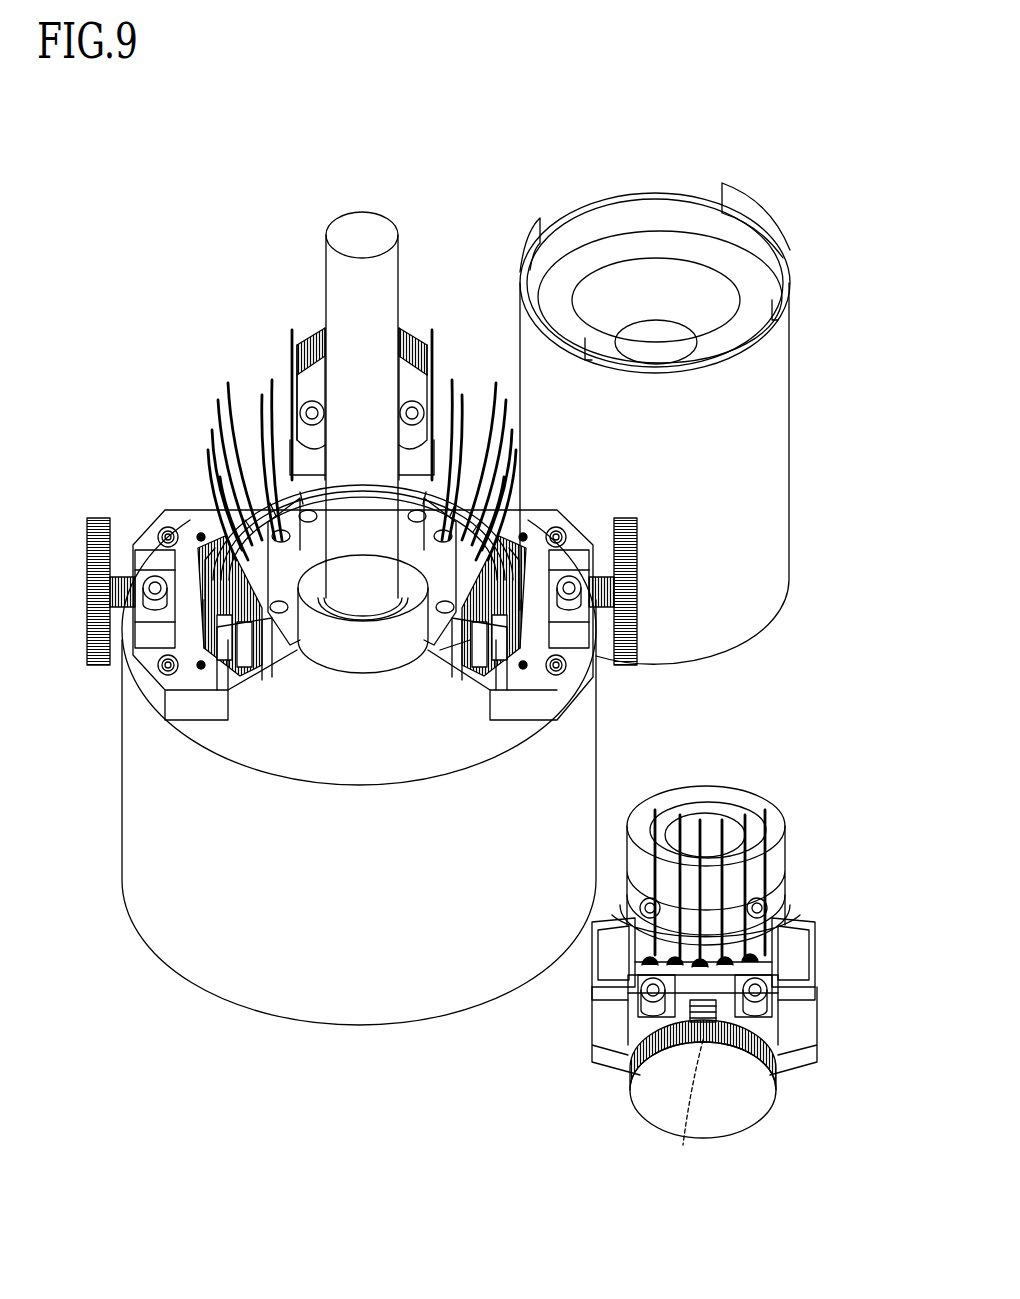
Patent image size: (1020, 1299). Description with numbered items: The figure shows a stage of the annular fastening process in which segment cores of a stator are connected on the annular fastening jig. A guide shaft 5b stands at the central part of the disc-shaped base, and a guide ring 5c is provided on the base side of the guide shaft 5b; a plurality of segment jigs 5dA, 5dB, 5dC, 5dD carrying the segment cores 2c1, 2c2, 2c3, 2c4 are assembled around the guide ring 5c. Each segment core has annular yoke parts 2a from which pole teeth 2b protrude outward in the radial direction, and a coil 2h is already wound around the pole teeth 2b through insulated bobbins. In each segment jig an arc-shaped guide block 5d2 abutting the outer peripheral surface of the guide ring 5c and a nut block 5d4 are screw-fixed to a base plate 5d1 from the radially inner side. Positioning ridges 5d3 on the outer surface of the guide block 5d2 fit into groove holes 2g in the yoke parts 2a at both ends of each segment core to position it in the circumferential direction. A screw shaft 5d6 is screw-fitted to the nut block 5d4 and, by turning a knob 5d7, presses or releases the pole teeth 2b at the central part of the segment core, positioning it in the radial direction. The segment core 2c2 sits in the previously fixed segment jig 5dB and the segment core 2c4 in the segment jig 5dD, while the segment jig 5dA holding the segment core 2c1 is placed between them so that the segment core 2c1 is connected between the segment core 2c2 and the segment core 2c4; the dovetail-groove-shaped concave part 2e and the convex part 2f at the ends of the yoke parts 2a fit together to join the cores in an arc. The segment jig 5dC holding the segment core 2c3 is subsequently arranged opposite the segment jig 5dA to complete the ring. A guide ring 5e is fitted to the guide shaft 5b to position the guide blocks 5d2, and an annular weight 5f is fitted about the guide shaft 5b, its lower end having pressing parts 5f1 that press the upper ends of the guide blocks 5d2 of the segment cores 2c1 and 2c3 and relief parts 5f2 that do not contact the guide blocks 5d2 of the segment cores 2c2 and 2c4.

The annular yoke part 2a is at (180, 692).
The pole tooth 2b is at (812, 976).
The segment core 2c1 is at (280, 470).
The segment core 2c2 is at (205, 575).
The segment core 2c3 is at (812, 932).
The segment core 2c4 is at (524, 526).
The concave part 2e is at (258, 645).
The convex part 2f is at (462, 652).
The groove hole 2g is at (240, 622).
The coil 2h is at (222, 616).
The guide shaft 5b is at (396, 226).
The guide ring 5c is at (366, 676).
The base plate 5d1 is at (470, 430).
The guide block 5d2 is at (262, 440).
The positioning ridge 5d3 is at (285, 645).
The nut block 5d4 is at (428, 380).
The screw shaft 5d6 is at (126, 576).
The knob 5d7 is at (90, 522).
The segment jig 5dA is at (455, 440).
The segment jig 5dB is at (136, 665).
The segment jig 5dC is at (888, 1037).
The segment jig 5dD is at (653, 704).
The guide ring 5e is at (736, 792).
The annular weight 5f is at (792, 318).
The pressing part 5f1 is at (533, 224).
The relief part 5f2 is at (668, 192).